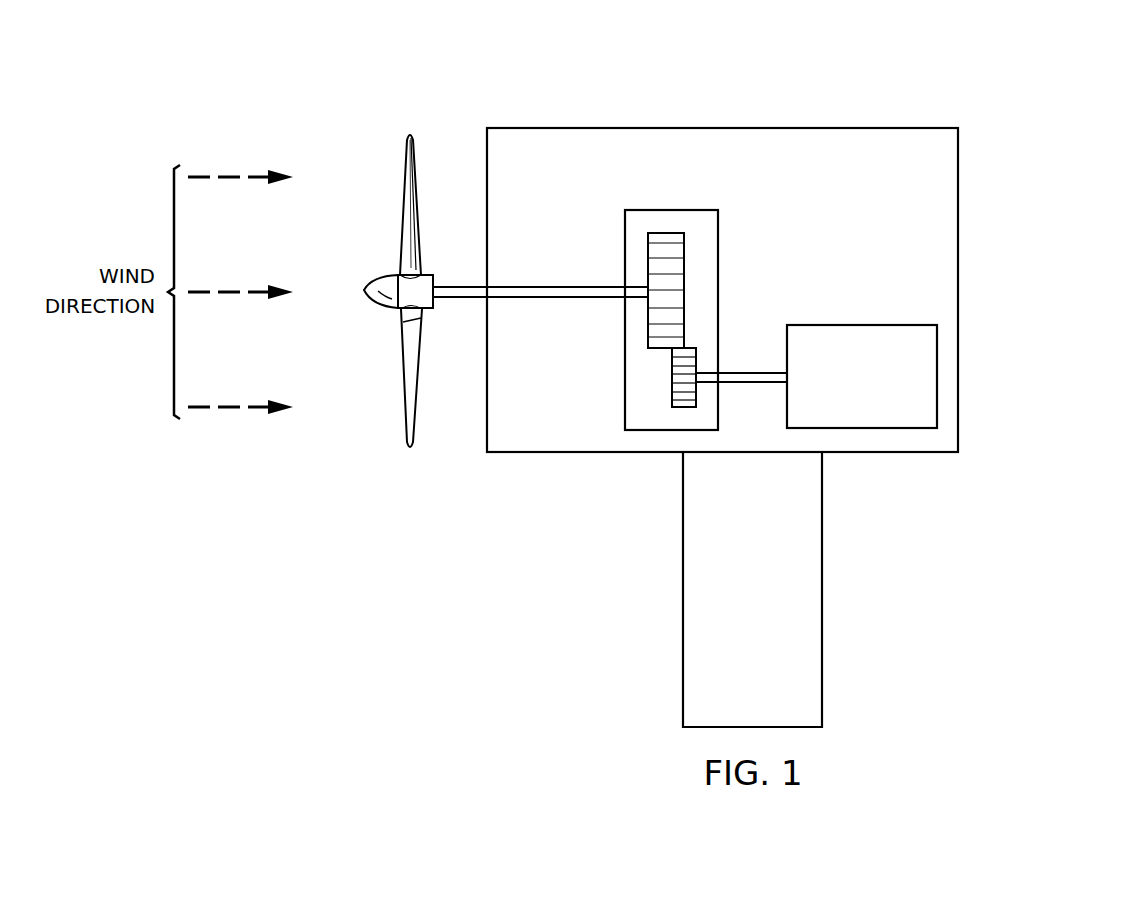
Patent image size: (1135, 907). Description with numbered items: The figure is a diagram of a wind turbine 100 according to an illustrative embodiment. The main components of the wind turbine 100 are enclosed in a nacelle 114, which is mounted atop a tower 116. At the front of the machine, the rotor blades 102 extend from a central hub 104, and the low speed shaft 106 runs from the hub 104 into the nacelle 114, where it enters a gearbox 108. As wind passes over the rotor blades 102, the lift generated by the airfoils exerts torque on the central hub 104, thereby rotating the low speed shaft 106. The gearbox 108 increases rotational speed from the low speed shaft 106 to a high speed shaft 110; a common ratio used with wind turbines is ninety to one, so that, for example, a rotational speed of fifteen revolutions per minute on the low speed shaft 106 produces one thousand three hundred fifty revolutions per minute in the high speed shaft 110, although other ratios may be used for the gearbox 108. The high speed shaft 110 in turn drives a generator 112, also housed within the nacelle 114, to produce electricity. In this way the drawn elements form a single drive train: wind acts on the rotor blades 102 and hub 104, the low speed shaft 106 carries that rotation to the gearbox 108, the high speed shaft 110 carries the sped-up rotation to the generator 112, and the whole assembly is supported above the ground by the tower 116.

The wind turbine 100 is at (906, 72).
The rotor blades 102 is at (405, 215).
The central hub 104 is at (375, 305).
The low speed shaft 106 is at (585, 285).
The gearbox 108 is at (625, 343).
The high speed shaft 110 is at (752, 370).
The generator 112 is at (841, 410).
The nacelle 114 is at (839, 172).
The tower 116 is at (731, 623).